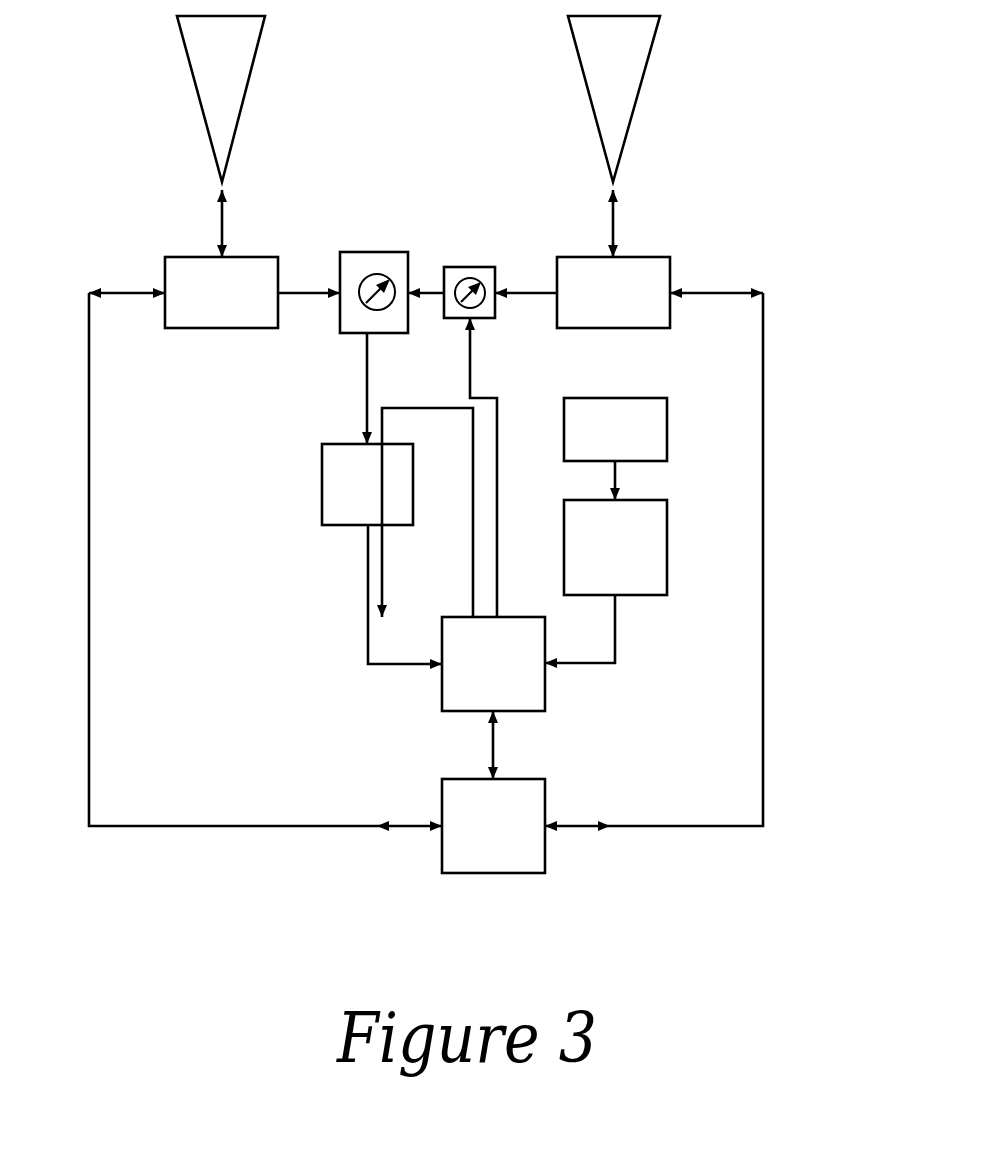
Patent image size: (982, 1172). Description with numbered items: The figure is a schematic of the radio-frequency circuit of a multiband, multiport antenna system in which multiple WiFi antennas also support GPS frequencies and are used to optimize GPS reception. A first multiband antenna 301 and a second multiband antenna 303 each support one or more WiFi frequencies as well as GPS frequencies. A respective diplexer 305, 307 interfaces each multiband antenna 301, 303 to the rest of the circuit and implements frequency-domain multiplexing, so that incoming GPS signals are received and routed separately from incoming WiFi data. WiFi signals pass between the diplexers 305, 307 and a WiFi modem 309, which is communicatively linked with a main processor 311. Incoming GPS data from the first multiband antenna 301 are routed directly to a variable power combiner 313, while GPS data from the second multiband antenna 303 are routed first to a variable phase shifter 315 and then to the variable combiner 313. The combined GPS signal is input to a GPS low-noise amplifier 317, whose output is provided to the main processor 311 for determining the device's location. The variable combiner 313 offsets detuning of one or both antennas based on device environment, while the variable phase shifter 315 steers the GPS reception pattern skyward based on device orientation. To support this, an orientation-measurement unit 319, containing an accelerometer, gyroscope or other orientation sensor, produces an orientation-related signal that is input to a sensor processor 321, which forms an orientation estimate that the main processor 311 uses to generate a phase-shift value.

The first multiband antenna 301 is at (243, 60).
The second multiband antenna 303 is at (640, 60).
The diplexer 305 is at (248, 268).
The diplexer 307 is at (652, 268).
The WiFi modem 309 is at (538, 792).
The main processor 311 is at (545, 697).
The variable power combiner 313 is at (374, 262).
The variable phase shifter 315 is at (470, 268).
The GPS low-noise amplifier 317 is at (340, 456).
The orientation-measurement unit 319 is at (655, 424).
The sensor processor 321 is at (638, 546).